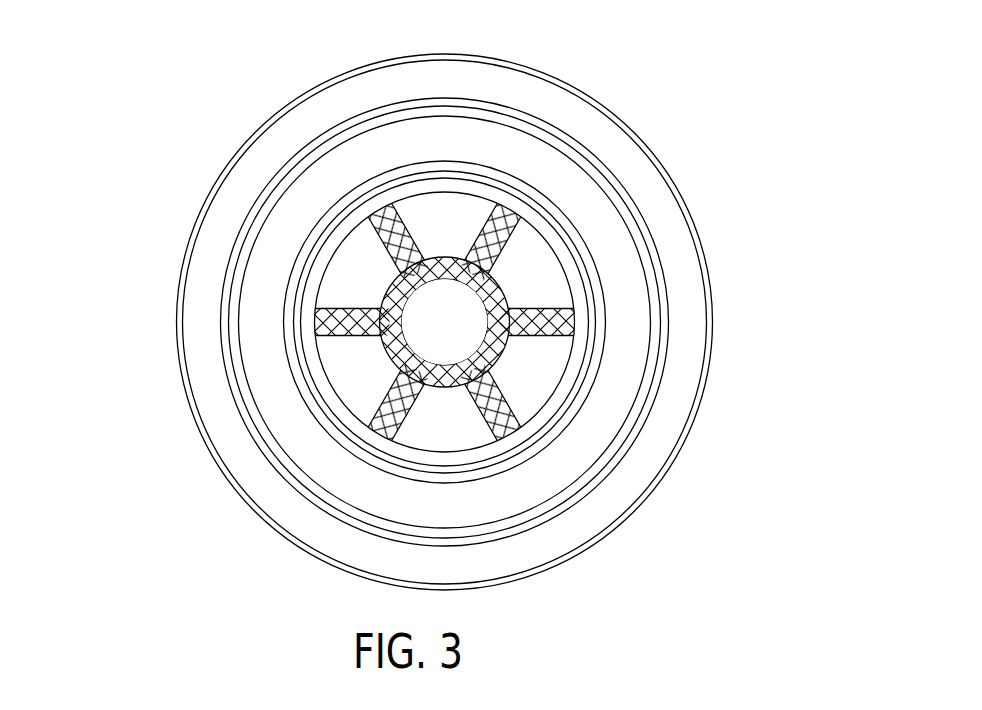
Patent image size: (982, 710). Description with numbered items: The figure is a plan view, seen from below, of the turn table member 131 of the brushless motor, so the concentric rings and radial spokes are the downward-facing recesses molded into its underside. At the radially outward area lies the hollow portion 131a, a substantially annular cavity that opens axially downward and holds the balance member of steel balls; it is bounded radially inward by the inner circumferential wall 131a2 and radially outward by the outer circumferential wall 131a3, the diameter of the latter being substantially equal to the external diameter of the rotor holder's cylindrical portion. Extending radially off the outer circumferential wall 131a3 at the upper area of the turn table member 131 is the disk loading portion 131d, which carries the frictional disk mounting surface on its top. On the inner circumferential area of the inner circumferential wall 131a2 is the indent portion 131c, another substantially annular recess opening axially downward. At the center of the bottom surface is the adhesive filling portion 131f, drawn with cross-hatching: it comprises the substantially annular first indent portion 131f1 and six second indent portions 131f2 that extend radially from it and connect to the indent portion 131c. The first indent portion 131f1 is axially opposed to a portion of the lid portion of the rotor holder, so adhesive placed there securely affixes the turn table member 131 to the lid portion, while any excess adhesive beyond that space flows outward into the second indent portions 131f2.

The turn table member 131 is at (117, 53).
The hollow portion 131a is at (590, 442).
The inner circumferential wall 131a2 is at (603, 347).
The outer circumferential wall 131a3 is at (642, 418).
The indent portion 131c is at (343, 418).
The disk loading portion 131d is at (683, 266).
The adhesive filling portion 131f is at (380, 290).
The first indent portion 131f1 is at (390, 353).
The second indent portions 131f2 is at (330, 315).